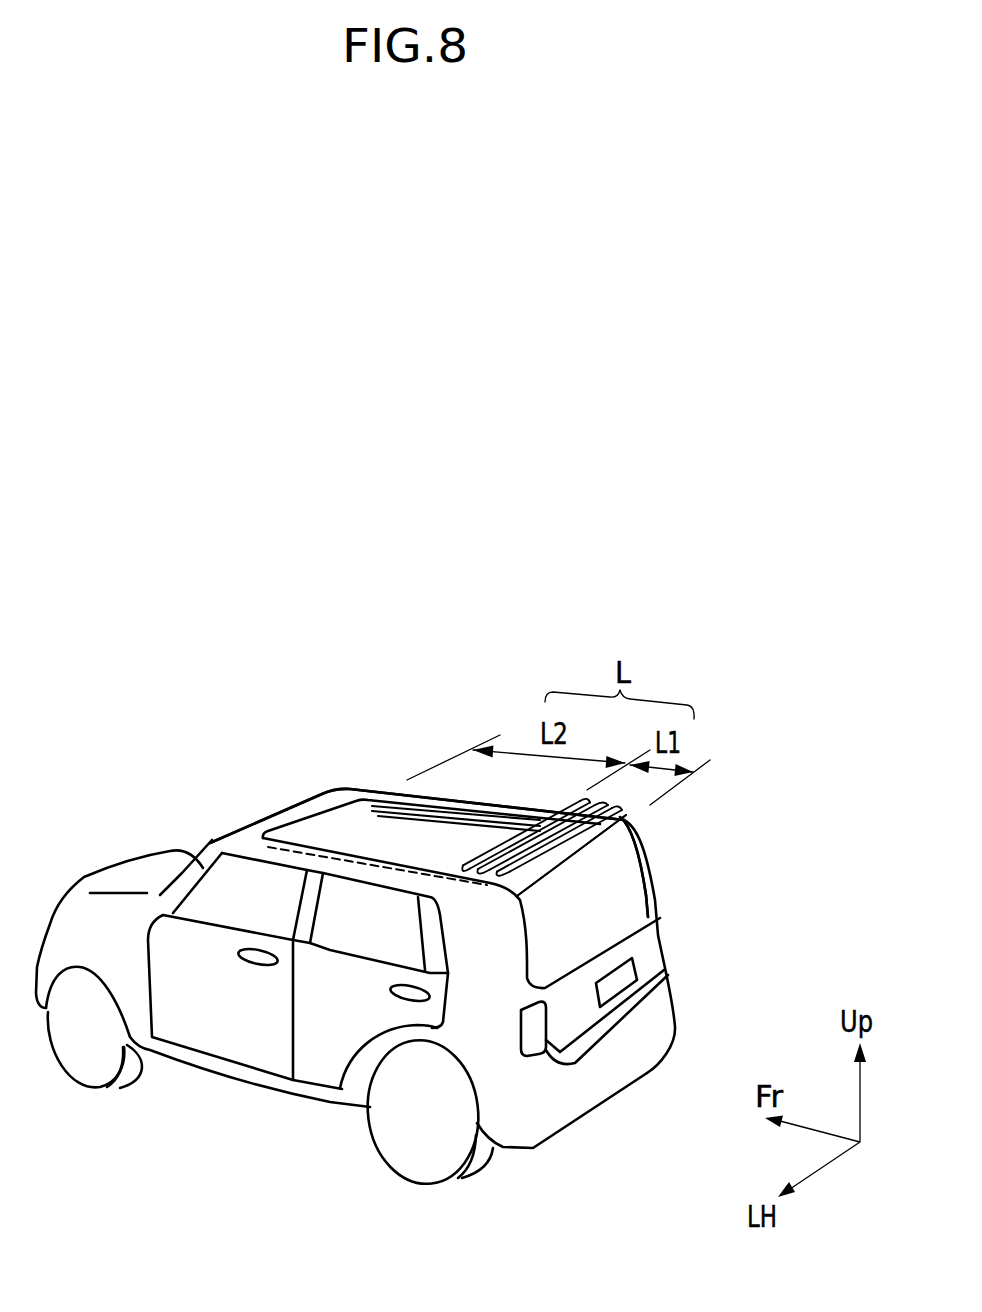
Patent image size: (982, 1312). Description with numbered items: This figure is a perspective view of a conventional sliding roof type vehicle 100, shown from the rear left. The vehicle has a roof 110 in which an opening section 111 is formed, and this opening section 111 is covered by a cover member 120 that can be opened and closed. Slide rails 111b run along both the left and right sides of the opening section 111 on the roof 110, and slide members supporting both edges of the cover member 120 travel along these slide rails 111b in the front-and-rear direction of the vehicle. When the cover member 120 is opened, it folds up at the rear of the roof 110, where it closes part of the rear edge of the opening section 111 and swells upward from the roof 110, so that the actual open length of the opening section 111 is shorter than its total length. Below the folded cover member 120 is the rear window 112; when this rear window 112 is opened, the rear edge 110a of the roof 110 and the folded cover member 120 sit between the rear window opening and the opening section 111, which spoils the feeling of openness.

The sliding roof type vehicle 100 is at (170, 782).
The roof 110 is at (317, 803).
The opening section 111 is at (383, 812).
The slide rails 111b is at (447, 800).
The cover member 120 is at (630, 827).
The rear edge of the roof 110a is at (570, 859).
The rear window 112 is at (623, 912).